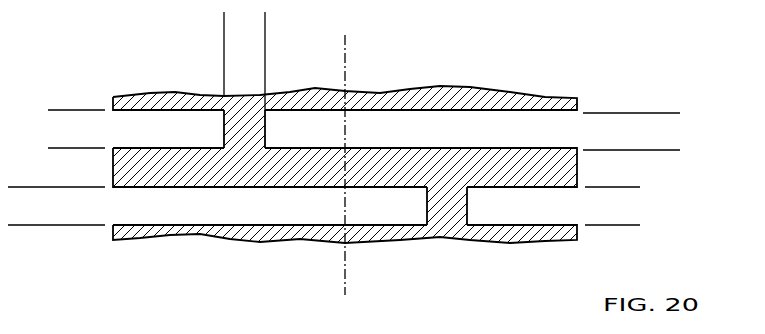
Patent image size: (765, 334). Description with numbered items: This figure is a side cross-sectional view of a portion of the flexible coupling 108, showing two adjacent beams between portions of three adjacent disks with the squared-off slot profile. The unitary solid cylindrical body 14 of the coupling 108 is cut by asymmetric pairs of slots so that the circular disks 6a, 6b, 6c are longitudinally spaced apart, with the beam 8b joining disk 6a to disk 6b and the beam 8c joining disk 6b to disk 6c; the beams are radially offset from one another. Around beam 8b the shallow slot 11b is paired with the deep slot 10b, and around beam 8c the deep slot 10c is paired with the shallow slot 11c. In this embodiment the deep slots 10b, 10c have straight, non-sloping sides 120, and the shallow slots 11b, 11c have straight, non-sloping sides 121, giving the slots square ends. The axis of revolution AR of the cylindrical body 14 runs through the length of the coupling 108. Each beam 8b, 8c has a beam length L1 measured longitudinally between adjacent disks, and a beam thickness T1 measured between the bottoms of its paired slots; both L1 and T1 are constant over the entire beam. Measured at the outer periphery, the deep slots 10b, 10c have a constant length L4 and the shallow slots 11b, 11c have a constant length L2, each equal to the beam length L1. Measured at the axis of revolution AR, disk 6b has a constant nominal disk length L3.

The unitary solid cylindrical body 14 is at (391, 164).
The flexible coupling 108 is at (509, 55).
The circular disk 6a is at (580, 100).
The circular disk 6b is at (580, 165).
The circular disk 6c is at (580, 238).
The radially offset beam 8b is at (223, 128).
The radially offset beam 8c is at (455, 214).
The shallow slot 11b is at (174, 131).
The shallow slot 11c is at (548, 207).
The deep slot 10b is at (536, 131).
The deep slot 10c is at (149, 203).
The straight sides of deep slots 120 is at (518, 148).
The straight sides of shallow slots 121 is at (163, 108).
The axis of revolution AR is at (346, 53).
The beam thickness T1 is at (200, 22).
The beam length L1 is at (447, 155).
The shallow slot length L2 is at (60, 84).
The disk length L3 is at (345, 95).
The deep slot length L4 is at (21, 189).